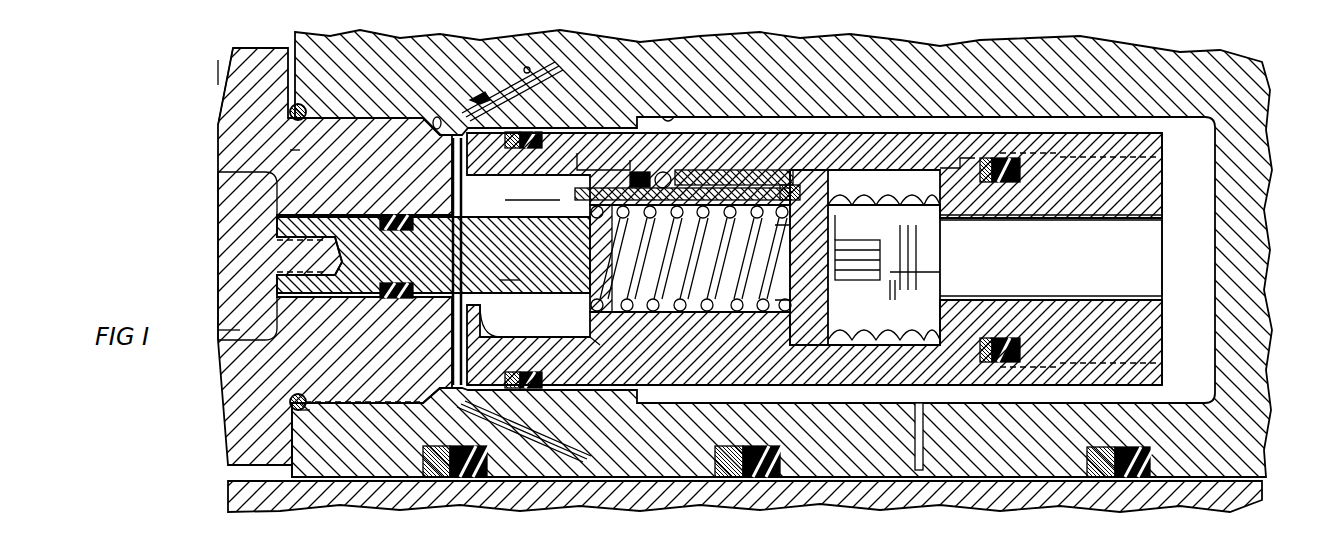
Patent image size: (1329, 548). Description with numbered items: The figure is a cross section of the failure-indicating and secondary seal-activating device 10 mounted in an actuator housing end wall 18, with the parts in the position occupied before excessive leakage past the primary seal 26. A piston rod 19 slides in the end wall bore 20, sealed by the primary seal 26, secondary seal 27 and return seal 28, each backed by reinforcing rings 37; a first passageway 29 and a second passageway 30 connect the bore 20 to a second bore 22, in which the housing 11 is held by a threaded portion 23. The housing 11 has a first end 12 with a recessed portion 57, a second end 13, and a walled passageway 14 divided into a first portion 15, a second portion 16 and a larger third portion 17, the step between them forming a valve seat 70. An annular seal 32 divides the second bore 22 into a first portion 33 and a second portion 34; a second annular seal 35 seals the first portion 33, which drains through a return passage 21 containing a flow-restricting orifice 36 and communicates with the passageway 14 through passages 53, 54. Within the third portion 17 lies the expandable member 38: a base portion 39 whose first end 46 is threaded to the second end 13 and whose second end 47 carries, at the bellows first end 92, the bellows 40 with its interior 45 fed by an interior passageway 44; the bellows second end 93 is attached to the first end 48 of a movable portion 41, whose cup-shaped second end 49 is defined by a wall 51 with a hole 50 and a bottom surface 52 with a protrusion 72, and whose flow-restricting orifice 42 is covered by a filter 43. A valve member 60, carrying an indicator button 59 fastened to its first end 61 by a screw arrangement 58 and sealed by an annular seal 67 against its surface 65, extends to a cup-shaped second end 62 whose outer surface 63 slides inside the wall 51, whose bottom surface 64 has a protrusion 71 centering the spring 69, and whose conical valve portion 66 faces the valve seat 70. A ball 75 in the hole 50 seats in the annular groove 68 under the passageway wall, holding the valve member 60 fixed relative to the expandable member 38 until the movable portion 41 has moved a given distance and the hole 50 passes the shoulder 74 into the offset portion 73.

The failure-indicating and secondary seal-activating device 10 is at (206, 76).
The housing 11 is at (218, 119).
The first end 12 is at (218, 160).
The second end 13 is at (1162, 132).
The walled passageway 14 is at (533, 191).
The first portion 15 is at (340, 215).
The second portion 16 is at (472, 215).
The third portion 17 is at (548, 168).
The actuator housing end wall 18 is at (282, 467).
The piston rod 19 is at (685, 503).
The end wall bore 20 is at (1262, 477).
The return passage 21 is at (527, 67).
The second bore 22 is at (668, 117).
The exteriorly threaded portion 23 is at (383, 110).
The primary seal 26 is at (1135, 447).
The secondary seal 27 is at (757, 445).
The return seal 28 is at (452, 445).
The first passageway 29 is at (923, 432).
The second passageway 30 is at (582, 462).
The annular seal 32 is at (528, 132).
The first portion 33 is at (437, 117).
The second portion 34 is at (897, 130).
The second annular seal 35 is at (290, 118).
The flow-restricting orifice 36 is at (508, 80).
The reinforcing rings 37 is at (420, 438).
The expandable member 38 is at (1176, 200).
The base portion 39 is at (985, 350).
The bellows 40 is at (878, 187).
The movable portion 41 is at (812, 345).
The flow-restricting orifice 42 is at (828, 268).
The filter 43 is at (922, 205).
The interior passageway 44 is at (1072, 225).
The bellows interior 45 is at (911, 257).
The first end 46 is at (1162, 270).
The second end 47 is at (940, 272).
The first end 48 is at (838, 215).
The second end 49 is at (814, 342).
The hole 50 is at (700, 170).
The wall 51 is at (806, 356).
The bottom surface 52 is at (775, 185).
The passage 53 is at (452, 160).
The second passage 54 is at (452, 328).
The recessed portion 57 is at (290, 185).
The screw and threaded bore arrangement 58 is at (340, 271).
The indicator button 59 is at (208, 266).
The valve member 60 is at (493, 321).
The first end 61 is at (232, 314).
The second end 62 is at (775, 345).
The outer surface 63 is at (600, 332).
The bottom surface 64 is at (600, 224).
The surface 65 is at (530, 305).
The annular valve portion 66 is at (588, 305).
The annular seal 67 is at (410, 232).
The annular groove 68 is at (660, 320).
The spring 69 is at (600, 188).
The valve seat 70 is at (501, 271).
The protrusion 71 is at (610, 254).
The protrusion 72 is at (775, 228).
The offset portion 73 is at (601, 154).
The shoulder 74 is at (663, 172).
The ball 75 is at (640, 172).
The first end 92 is at (902, 290).
The second end 93 is at (857, 270).